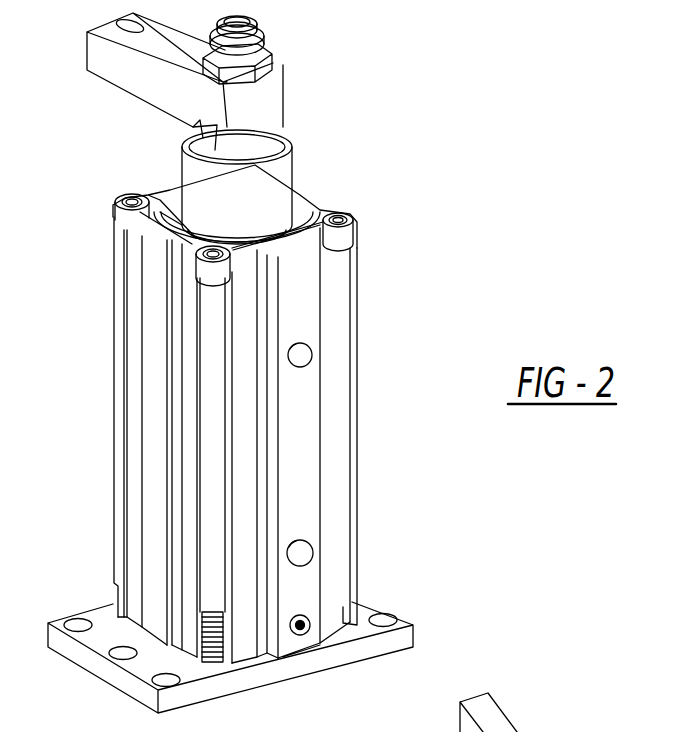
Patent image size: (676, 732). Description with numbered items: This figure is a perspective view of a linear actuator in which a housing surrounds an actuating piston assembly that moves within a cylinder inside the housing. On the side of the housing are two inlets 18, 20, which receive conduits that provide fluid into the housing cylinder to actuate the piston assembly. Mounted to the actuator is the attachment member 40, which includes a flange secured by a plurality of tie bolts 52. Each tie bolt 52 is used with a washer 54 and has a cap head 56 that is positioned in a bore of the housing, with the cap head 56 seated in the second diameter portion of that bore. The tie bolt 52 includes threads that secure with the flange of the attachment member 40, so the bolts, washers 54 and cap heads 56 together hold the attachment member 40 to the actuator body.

The cap head 56 is at (358, 228).
The washer 54 is at (360, 252).
The inlet 18 is at (306, 355).
The attachment member 40 is at (358, 410).
The tie bolt 52 is at (357, 520).
The inlet 20 is at (306, 554).